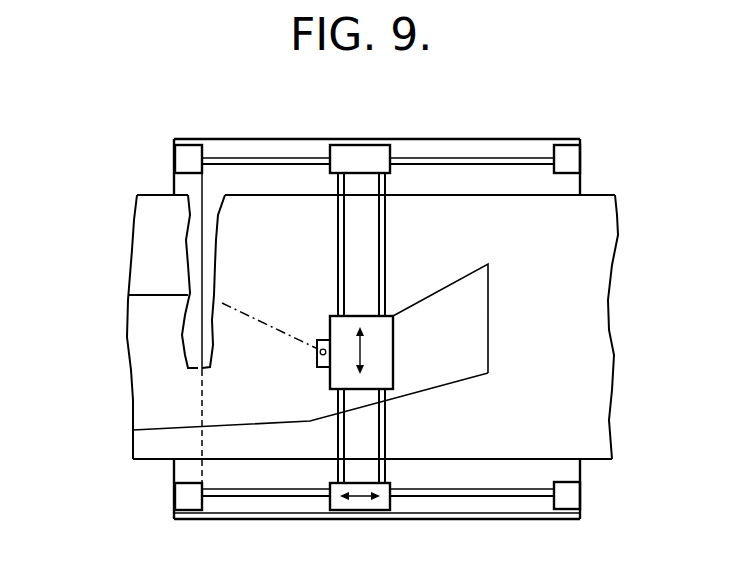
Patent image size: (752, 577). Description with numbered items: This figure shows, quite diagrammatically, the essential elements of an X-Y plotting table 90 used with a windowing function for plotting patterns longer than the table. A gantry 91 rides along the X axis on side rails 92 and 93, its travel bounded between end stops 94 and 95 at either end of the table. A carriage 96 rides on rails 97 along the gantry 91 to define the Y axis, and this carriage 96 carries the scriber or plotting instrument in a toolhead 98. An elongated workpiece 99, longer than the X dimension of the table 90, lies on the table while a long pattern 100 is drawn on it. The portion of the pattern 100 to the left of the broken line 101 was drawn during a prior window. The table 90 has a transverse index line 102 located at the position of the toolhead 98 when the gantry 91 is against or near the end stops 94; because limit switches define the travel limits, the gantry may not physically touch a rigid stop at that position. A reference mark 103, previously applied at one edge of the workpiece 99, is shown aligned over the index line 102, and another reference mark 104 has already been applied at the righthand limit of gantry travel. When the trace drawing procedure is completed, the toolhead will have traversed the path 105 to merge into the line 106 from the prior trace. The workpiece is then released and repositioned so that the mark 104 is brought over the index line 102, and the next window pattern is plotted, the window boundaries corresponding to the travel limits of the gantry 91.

The plotting table 90 is at (513, 132).
The gantry 91 is at (349, 152).
The side rail 92 is at (266, 157).
The side rail 93 is at (245, 498).
The end stop 94 is at (182, 152).
The end stop 95 is at (581, 150).
The carriage 96 is at (380, 352).
The rails 97 is at (379, 262).
The toolhead 98 is at (321, 340).
The workpiece 99 is at (616, 229).
The pattern 100 is at (488, 292).
The broken line 101 is at (204, 393).
The index line 102 is at (203, 243).
The reference mark 103 is at (204, 459).
The reference mark 104 is at (488, 459).
The path 105 is at (254, 318).
The line 106 is at (148, 293).